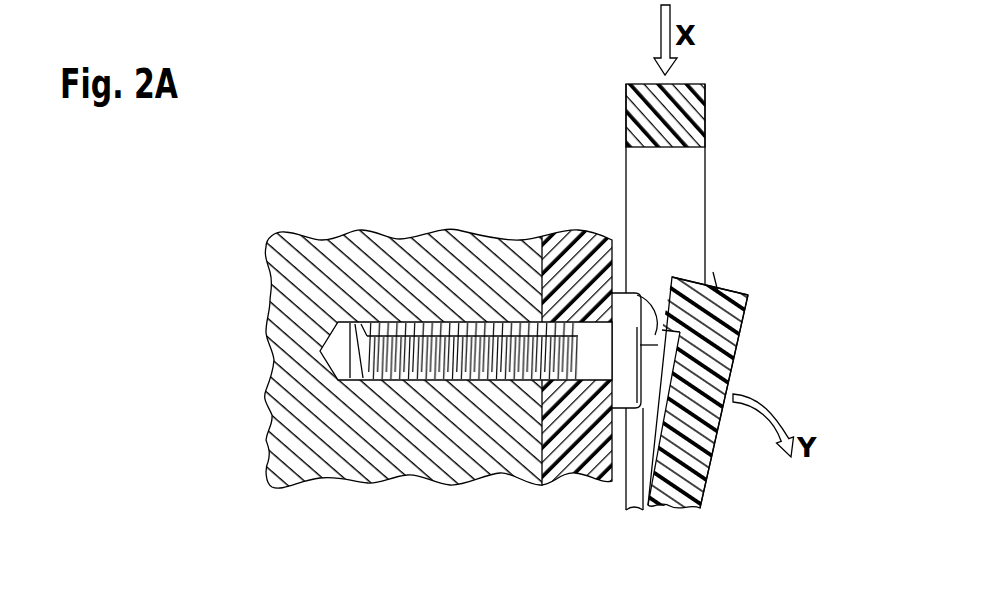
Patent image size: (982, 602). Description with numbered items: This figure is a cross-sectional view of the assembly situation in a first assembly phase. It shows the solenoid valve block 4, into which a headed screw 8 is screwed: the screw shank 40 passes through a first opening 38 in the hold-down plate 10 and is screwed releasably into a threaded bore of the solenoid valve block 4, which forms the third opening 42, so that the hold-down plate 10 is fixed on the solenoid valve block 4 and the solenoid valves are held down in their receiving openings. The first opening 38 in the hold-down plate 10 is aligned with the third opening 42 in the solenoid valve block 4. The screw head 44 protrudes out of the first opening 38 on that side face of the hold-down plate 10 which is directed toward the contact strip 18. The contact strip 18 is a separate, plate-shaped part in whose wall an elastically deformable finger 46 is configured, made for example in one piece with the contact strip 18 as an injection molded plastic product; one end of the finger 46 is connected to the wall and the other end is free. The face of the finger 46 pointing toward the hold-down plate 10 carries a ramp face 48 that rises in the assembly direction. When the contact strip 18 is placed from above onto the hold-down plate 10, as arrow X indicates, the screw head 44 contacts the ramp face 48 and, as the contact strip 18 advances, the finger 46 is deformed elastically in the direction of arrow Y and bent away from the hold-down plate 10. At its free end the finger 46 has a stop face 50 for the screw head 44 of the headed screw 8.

The solenoid valve block 4 is at (371, 440).
The headed screw 8 is at (490, 352).
The hold-down plate 10 is at (580, 440).
The contact strip 18 is at (676, 113).
The first opening 38 is at (572, 319).
The screw shank 40 is at (437, 335).
The third opening 42 is at (437, 385).
The screw head 44 is at (628, 325).
The finger 46 is at (702, 373).
The ramp face 48 is at (643, 294).
The stop face 50 is at (716, 282).